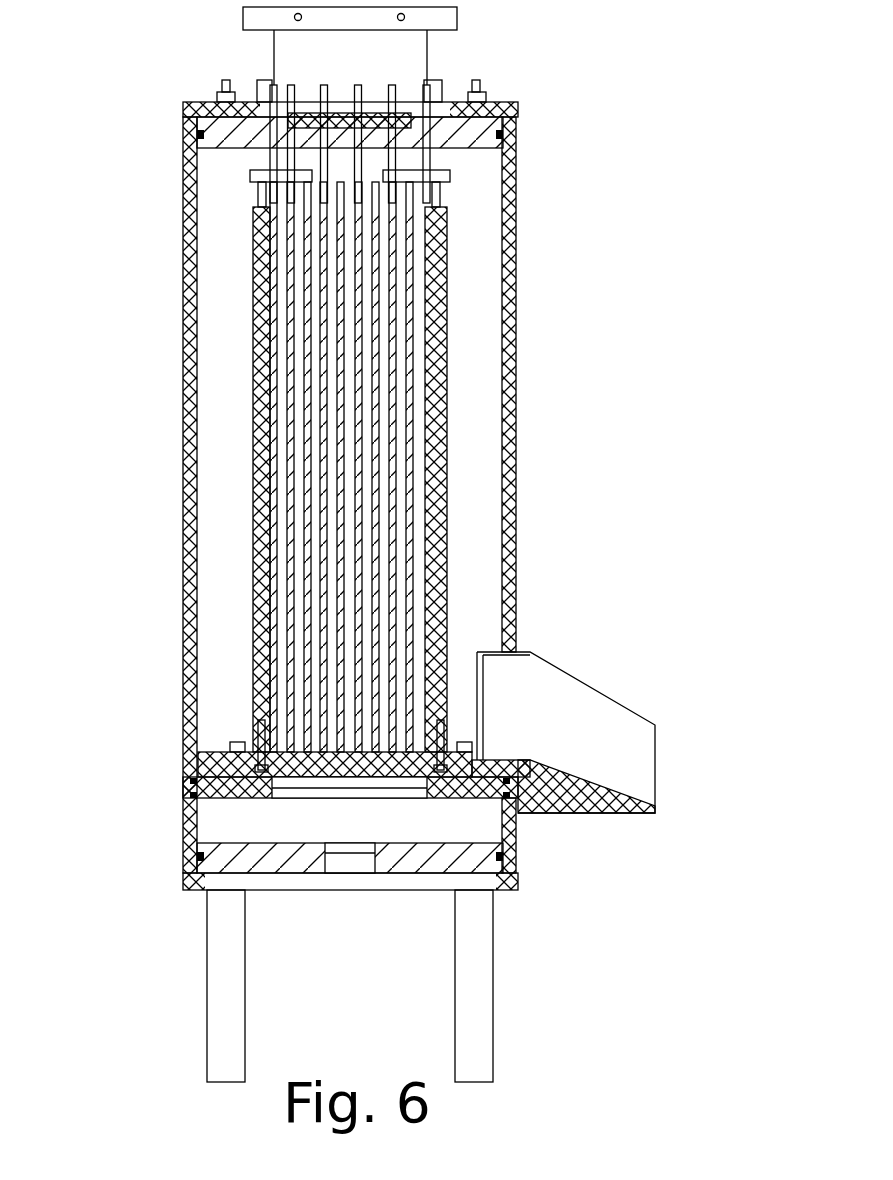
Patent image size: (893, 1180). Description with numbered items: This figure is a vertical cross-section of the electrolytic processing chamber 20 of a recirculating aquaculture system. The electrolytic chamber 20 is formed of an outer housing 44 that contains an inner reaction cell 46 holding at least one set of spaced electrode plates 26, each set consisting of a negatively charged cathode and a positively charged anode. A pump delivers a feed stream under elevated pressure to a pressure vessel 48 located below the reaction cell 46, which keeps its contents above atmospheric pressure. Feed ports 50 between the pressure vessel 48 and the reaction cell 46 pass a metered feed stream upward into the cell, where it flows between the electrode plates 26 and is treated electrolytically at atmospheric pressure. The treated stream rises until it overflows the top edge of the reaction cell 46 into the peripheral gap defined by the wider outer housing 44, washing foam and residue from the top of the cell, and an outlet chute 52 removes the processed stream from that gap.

The electrolytic processing chamber 20 is at (126, 120).
The electrode plates 26 is at (368, 420).
The outer housing 44 is at (515, 428).
The inner reaction cell 46 is at (442, 550).
The pressure vessel 48 is at (205, 828).
The feed ports 50 is at (383, 775).
The outlet chute 52 is at (655, 812).